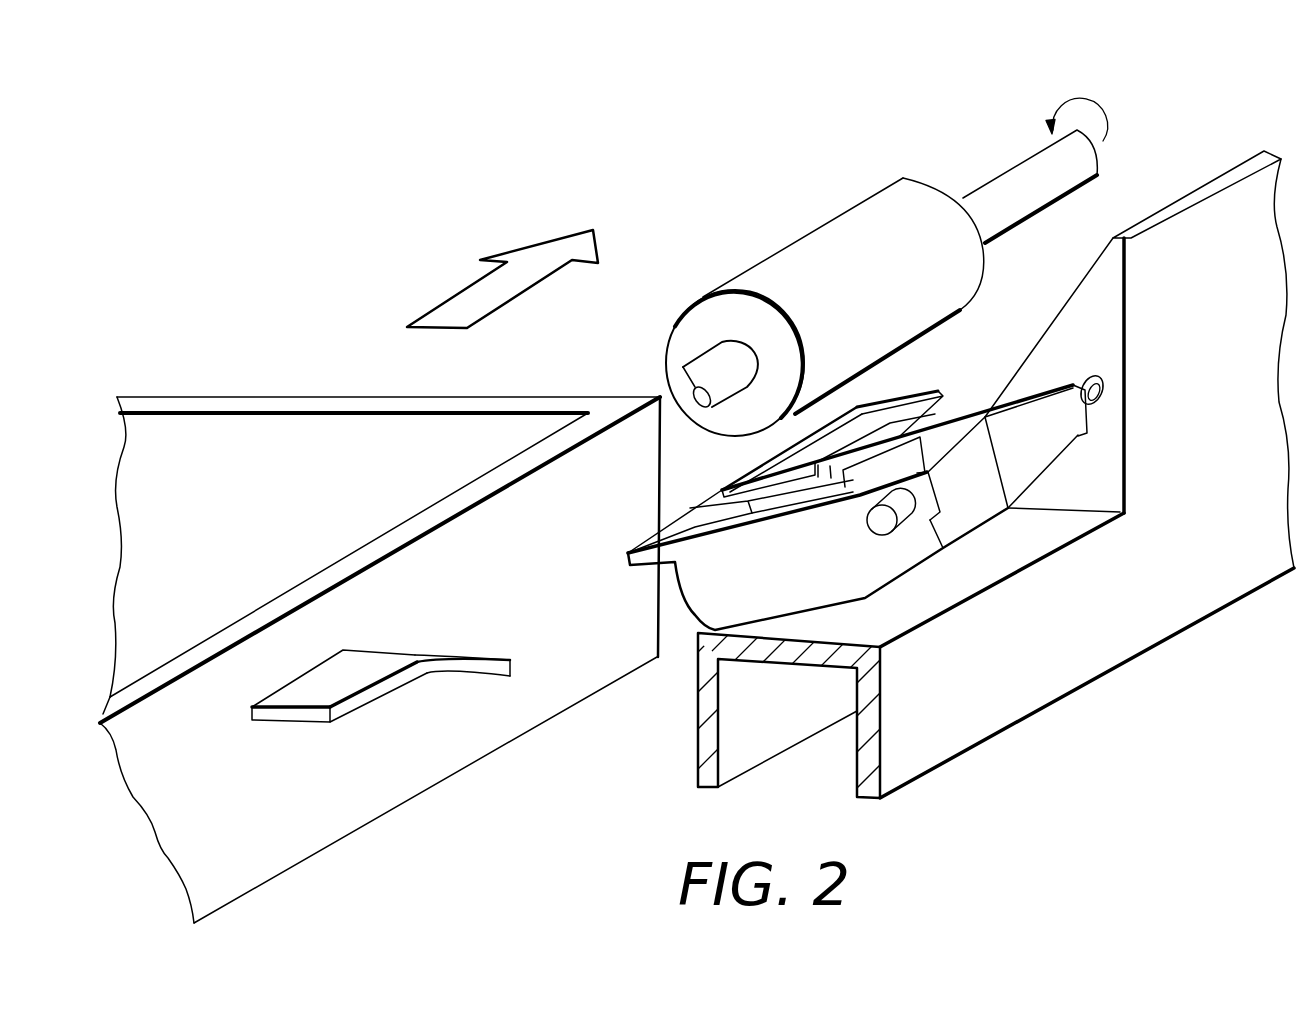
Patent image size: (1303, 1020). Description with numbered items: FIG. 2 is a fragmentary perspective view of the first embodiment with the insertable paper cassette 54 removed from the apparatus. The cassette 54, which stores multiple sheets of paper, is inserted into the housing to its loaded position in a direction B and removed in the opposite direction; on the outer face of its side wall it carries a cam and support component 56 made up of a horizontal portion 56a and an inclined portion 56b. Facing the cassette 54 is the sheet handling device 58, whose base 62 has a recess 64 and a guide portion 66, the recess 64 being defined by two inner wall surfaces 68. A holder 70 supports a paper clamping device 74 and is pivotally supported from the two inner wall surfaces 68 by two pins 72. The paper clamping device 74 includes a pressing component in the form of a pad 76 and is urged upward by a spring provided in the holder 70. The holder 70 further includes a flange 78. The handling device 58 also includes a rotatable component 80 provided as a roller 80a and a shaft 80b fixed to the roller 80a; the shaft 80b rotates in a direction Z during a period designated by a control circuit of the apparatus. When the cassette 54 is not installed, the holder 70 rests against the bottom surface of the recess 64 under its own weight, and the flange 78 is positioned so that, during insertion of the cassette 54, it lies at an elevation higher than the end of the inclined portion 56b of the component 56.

The cassette 54 is at (265, 392).
The cam and support component 56 is at (381, 710).
The horizontal portion 56a is at (373, 670).
The inclined portion 56b is at (460, 663).
The sheet handling device 58 is at (992, 282).
The base 62 is at (1087, 450).
The recess 64 is at (1028, 542).
The guide portion 66 is at (1090, 270).
The inner wall surfaces 68 is at (1105, 315).
The holder 70 is at (960, 562).
The pins 72 is at (905, 522).
The paper clamping device 74 is at (904, 410).
The pad 76 is at (883, 407).
The flange 78 is at (637, 563).
The rotatable component 80 is at (881, 239).
The roller 80a is at (872, 217).
The shaft 80b is at (992, 195).
The direction B is at (538, 263).
The direction Z is at (1090, 119).